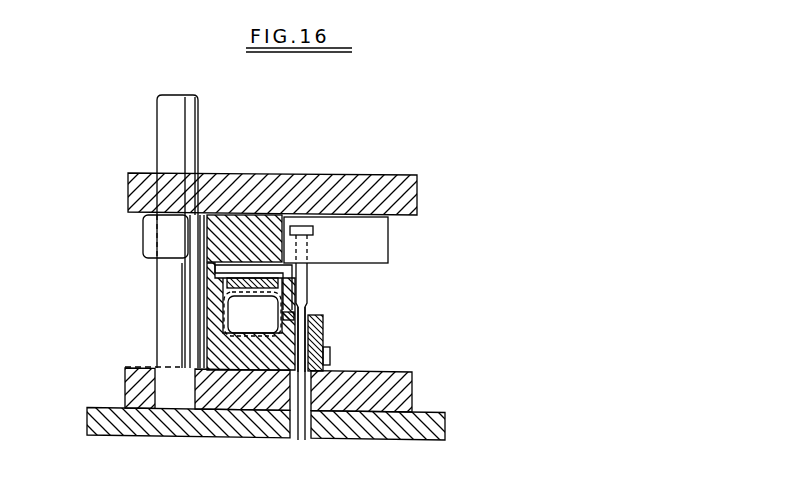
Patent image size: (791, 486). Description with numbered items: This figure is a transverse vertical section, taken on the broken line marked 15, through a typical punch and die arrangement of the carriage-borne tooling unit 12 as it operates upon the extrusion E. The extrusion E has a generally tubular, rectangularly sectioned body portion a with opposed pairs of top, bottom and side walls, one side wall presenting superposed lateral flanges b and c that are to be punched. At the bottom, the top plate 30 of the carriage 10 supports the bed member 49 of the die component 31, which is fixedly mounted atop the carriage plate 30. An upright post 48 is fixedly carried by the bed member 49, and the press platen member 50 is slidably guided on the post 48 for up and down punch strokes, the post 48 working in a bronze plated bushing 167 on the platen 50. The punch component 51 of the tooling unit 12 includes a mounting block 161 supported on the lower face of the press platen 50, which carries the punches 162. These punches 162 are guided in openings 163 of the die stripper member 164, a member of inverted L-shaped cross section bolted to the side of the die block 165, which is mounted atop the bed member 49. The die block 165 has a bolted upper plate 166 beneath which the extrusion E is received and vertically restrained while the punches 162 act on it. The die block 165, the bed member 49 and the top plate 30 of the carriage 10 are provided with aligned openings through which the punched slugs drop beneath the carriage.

The upright posts 48 is at (168, 141).
The press platen member 50 is at (404, 175).
The punch component 51 is at (390, 246).
The mounting block 161 is at (353, 250).
The tooling unit 12 is at (395, 274).
The section line of FIG. 15 is at (205, 267).
The upper plate 166 is at (196, 262).
The bronze plated bushings 167 is at (150, 243).
The extrusion E is at (214, 313).
The die component 31 is at (188, 342).
The die block 165 is at (213, 355).
The openings 163 is at (252, 314).
The punches 162 is at (318, 320).
The die stripper member 164 is at (320, 337).
The bed member 49 is at (397, 397).
The carriage plate 30 is at (437, 425).
The carriage 10 is at (154, 437).
The body portion a is at (258, 333).
The lateral flange b is at (276, 340).
The lateral flange c is at (289, 350).